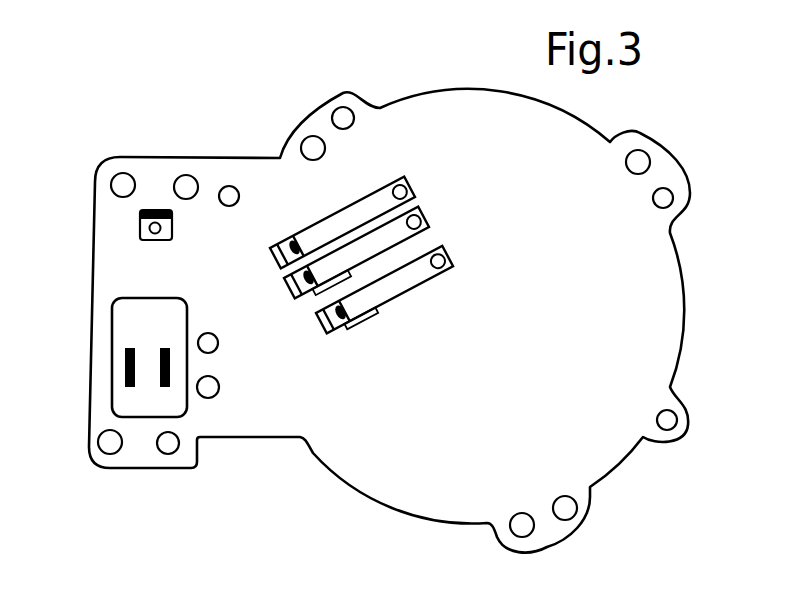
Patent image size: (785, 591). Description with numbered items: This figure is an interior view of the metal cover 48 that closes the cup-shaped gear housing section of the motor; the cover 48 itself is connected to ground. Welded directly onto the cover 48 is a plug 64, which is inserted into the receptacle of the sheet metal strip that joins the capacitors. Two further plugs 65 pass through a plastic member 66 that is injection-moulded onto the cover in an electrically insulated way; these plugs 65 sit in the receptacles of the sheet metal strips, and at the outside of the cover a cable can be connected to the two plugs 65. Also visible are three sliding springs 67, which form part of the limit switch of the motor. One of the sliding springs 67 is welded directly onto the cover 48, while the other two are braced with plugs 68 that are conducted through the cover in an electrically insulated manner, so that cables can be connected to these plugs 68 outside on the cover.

The cover 48 is at (660, 277).
The plug 64 is at (173, 223).
The plugs 65 is at (158, 385).
The plastic member 66 is at (118, 396).
The sliding springs 67 is at (360, 212).
The plugs 68 is at (293, 247).